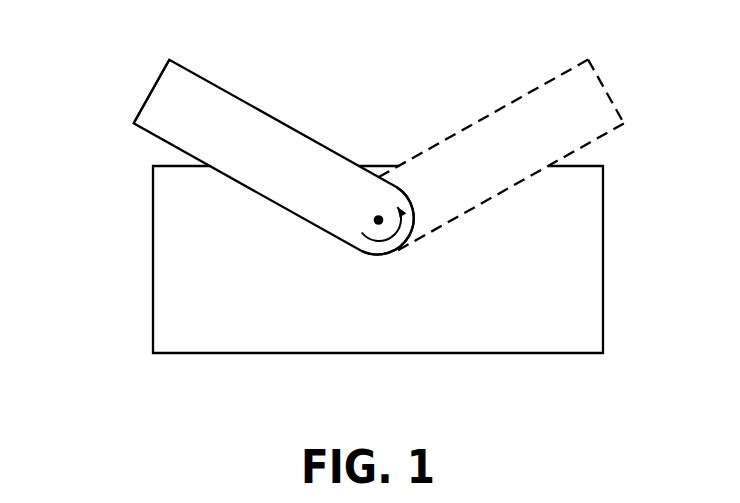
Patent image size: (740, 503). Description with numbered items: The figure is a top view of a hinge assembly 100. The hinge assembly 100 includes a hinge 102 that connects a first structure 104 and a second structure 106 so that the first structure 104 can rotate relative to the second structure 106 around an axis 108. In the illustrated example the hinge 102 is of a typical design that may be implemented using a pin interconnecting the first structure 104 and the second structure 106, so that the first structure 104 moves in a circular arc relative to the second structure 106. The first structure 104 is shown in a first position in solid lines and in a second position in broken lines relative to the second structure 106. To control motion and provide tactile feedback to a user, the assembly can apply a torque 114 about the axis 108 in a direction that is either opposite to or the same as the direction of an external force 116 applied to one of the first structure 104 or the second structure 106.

The hinge assembly 100 is at (110, 48).
The hinge 102 is at (340, 263).
The first structure 104 is at (227, 90).
The second structure 106 is at (604, 202).
The axis 108 is at (379, 214).
The torque 114 is at (365, 224).
The external force 116 is at (141, 142).